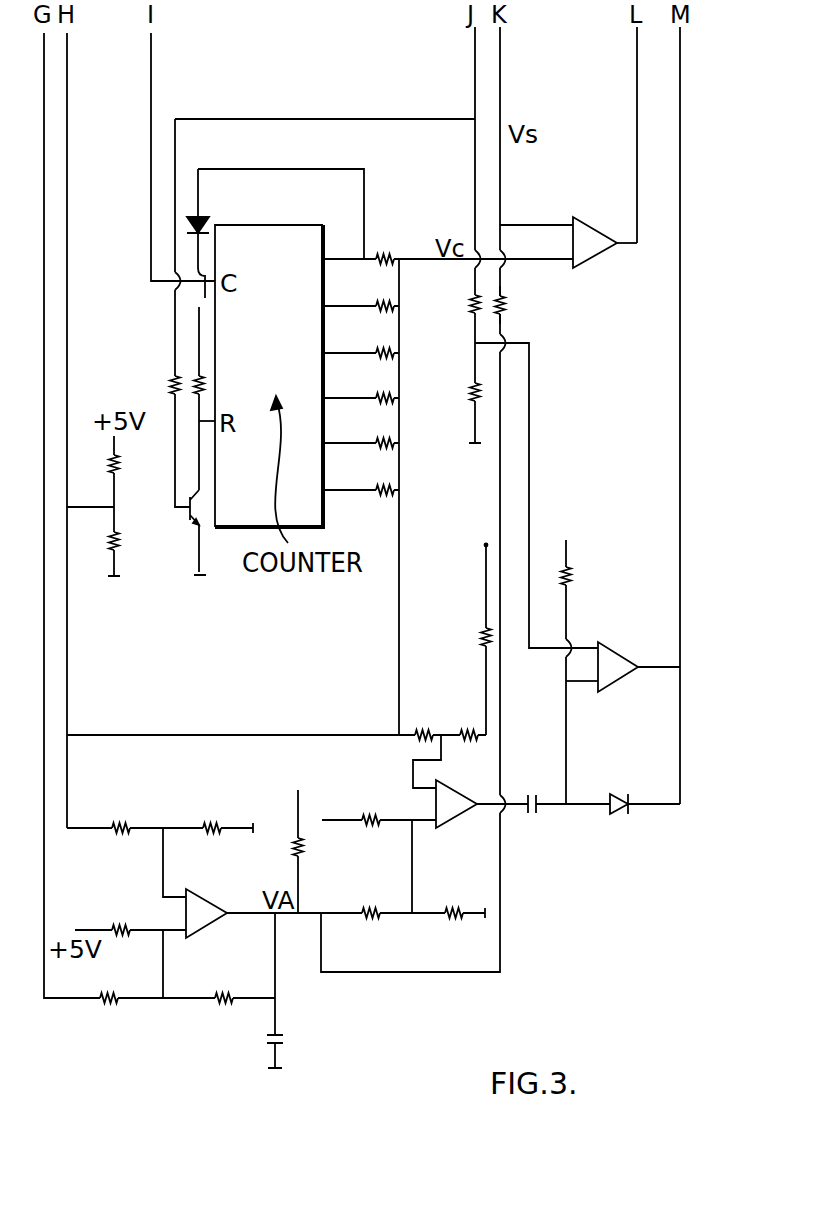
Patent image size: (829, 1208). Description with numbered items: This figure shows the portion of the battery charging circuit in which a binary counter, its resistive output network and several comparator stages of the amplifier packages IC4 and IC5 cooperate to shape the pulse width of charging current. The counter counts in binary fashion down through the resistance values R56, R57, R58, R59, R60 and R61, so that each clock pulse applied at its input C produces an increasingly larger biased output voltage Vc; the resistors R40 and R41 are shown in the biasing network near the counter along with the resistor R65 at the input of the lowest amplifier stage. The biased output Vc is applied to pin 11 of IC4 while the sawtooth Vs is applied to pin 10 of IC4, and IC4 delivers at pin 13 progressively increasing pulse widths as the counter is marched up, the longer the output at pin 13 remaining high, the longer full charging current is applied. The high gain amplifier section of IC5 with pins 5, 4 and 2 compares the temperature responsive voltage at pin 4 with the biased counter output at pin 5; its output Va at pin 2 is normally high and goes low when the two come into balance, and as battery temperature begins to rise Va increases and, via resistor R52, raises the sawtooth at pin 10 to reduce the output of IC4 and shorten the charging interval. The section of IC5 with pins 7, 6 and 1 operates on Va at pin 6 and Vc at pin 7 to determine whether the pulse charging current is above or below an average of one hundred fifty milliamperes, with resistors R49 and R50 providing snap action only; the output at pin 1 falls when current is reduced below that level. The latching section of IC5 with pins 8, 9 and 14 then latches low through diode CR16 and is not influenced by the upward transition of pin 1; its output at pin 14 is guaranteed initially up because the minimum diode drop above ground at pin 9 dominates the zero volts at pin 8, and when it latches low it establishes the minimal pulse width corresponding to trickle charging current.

The resistor R40 is at (121, 471).
The resistor R41 is at (142, 541).
The resistor R49 is at (429, 721).
The resistor R50 is at (470, 722).
The resistor R52 is at (527, 305).
The resistor R56 is at (370, 246).
The resistor R57 is at (361, 293).
The resistor R58 is at (361, 340).
The resistor R59 is at (361, 385).
The resistor R60 is at (361, 430).
The resistor R61 is at (361, 477).
The resistor R65 is at (130, 947).
The diode CR16 is at (611, 787).
The integrated circuit comparator IC4 is at (585, 217).
The integrated circuit amplifier IC5 is at (413, 775).
The pin 10 of IC4 10 is at (536, 214).
The pin 11 of IC4 11 is at (486, 248).
The pin 13 of IC4 13 is at (621, 229).
The pin 8 of IC5 8 is at (569, 634).
The pin 9 of IC5 9 is at (582, 674).
The pin 14 of IC5 14 is at (658, 658).
The pin 7 of IC5 7 is at (427, 764).
The pin 6 of IC5 6 is at (379, 813).
The pin 1 of IC5 1 is at (499, 791).
The pin 5 of IC5 5 is at (160, 861).
The pin 4 of IC5 4 is at (168, 921).
The pin 2 of IC5 2 is at (356, 905).